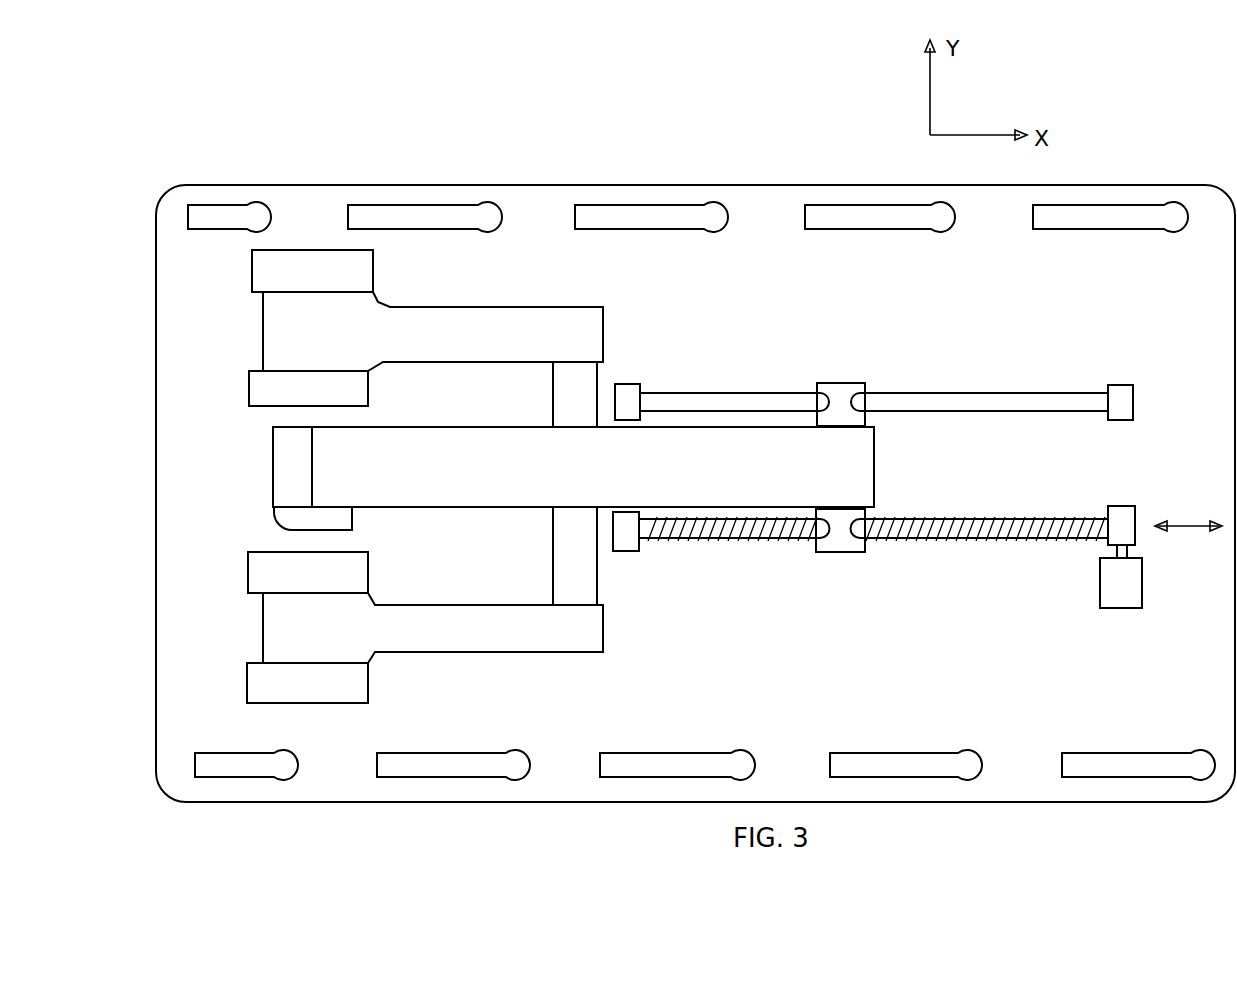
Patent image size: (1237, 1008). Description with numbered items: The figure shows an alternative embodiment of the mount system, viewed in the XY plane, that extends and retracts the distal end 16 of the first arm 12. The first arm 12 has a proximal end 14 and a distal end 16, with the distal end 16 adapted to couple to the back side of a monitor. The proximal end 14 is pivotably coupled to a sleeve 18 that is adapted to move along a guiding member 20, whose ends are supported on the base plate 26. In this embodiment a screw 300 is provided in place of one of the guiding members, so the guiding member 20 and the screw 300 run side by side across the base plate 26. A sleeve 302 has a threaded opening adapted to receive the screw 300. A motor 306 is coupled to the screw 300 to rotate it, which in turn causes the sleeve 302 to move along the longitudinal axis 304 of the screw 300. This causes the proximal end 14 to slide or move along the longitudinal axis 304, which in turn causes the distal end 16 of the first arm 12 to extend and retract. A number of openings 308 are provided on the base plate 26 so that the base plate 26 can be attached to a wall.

The first arm 12 is at (462, 490).
The proximal end 14 is at (853, 462).
The distal end 16 is at (283, 474).
The sleeve 18 is at (842, 388).
The guiding member 20 is at (968, 400).
The base plate 26 is at (763, 188).
The screw 300 is at (942, 533).
The sleeve 302 is at (837, 542).
The longitudinal axis 304 is at (1185, 522).
The motor 306 is at (1118, 595).
The openings 308 is at (418, 215).